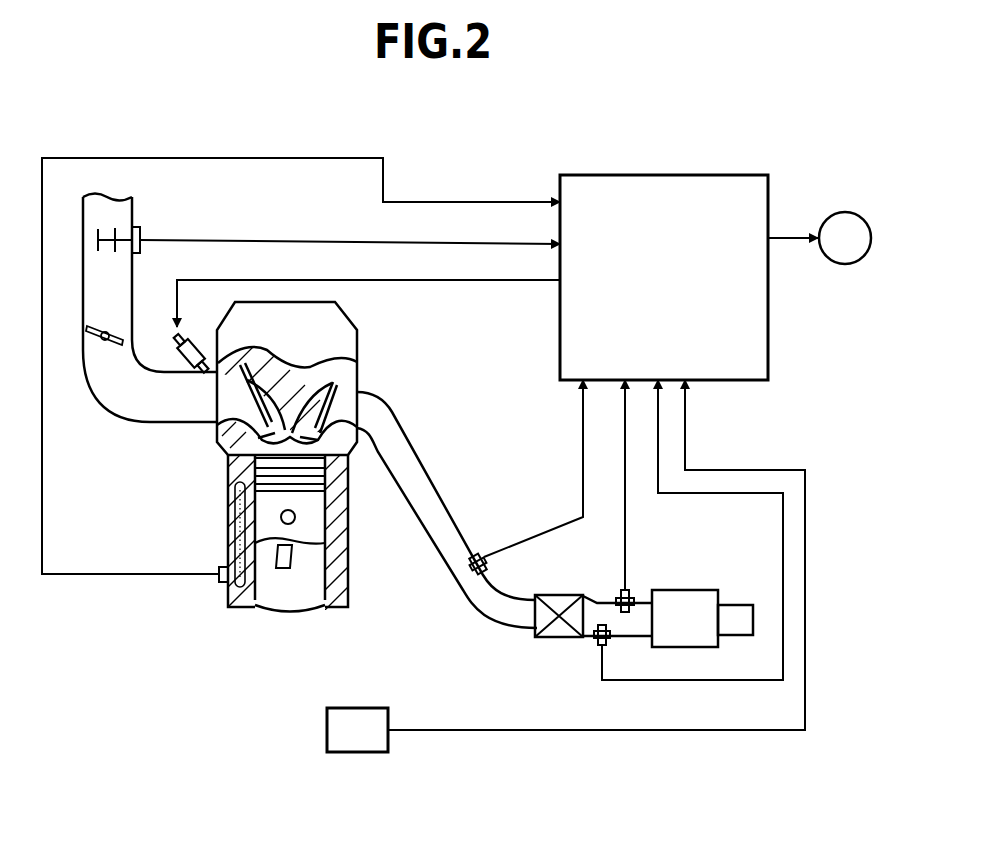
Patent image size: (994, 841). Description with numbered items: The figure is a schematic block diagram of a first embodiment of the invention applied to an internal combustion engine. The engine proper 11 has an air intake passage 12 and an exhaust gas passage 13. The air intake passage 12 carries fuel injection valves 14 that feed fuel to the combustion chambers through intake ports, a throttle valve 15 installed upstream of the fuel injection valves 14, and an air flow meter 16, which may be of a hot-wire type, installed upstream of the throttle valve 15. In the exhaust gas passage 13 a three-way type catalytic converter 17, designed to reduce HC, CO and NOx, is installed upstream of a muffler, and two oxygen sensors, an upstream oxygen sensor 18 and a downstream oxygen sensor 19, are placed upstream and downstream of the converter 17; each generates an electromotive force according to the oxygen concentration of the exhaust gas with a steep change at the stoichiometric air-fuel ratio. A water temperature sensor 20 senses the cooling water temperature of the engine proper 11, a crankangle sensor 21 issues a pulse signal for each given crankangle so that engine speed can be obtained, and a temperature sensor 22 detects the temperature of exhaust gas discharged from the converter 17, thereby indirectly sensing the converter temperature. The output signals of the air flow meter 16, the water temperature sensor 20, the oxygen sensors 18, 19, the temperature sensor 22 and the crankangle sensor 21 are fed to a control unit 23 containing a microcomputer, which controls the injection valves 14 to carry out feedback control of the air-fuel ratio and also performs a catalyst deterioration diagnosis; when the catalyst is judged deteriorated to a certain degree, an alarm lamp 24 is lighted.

The internal combustion engine proper 11 is at (355, 540).
The air intake passage 12 is at (135, 418).
The exhaust gas passage 13 is at (425, 493).
The fuel injection valve 14 is at (177, 355).
The throttle valve 15 is at (90, 345).
The air flow meter 16 is at (108, 226).
The three-way type catalytic converter 17 is at (560, 630).
The upstream oxygen sensor 18 is at (473, 545).
The downstream oxygen sensor 19 is at (629, 594).
The water temperature sensor 20 is at (222, 584).
The crankangle sensor 21 is at (373, 708).
The temperature sensor 22 is at (597, 640).
The control unit 23 is at (647, 175).
The alarm lamp 24 is at (840, 212).